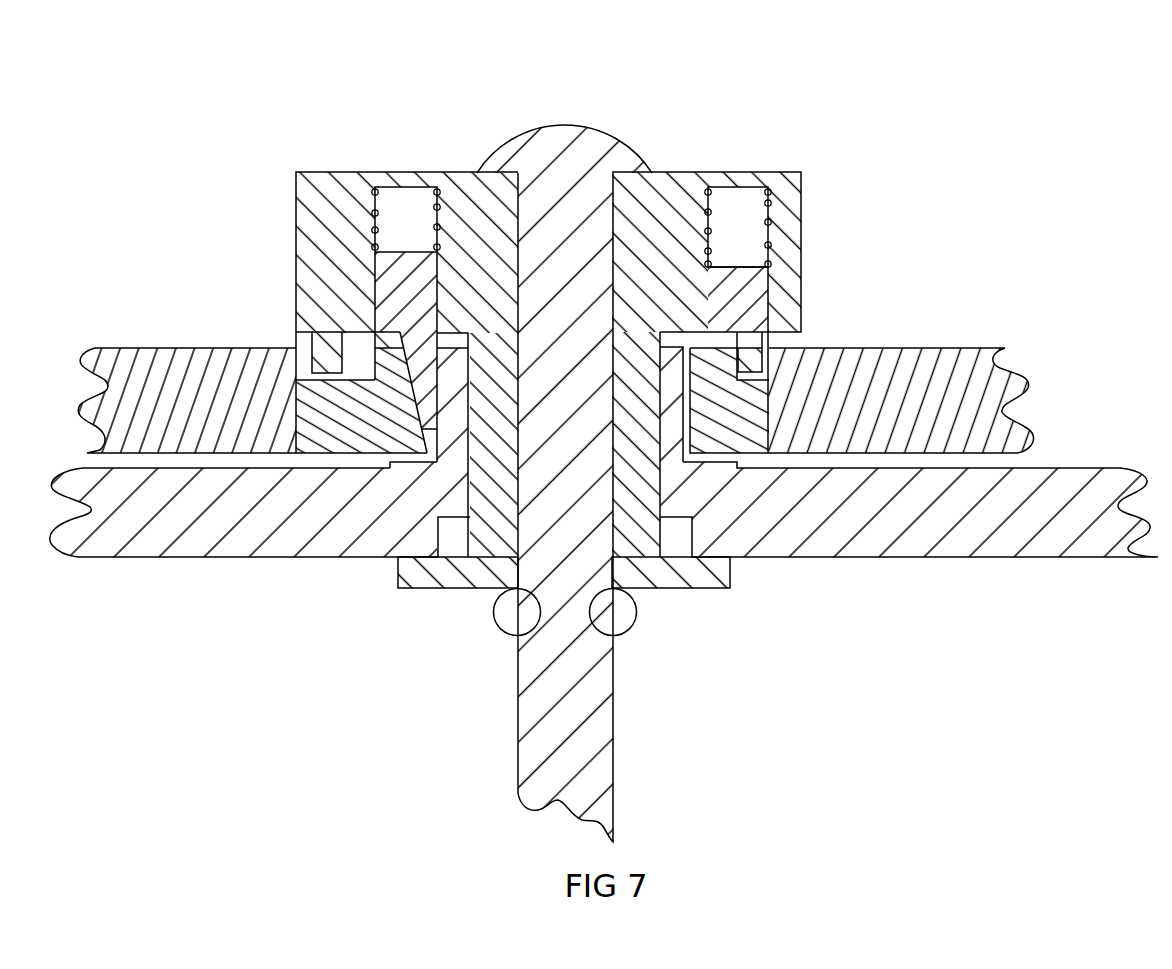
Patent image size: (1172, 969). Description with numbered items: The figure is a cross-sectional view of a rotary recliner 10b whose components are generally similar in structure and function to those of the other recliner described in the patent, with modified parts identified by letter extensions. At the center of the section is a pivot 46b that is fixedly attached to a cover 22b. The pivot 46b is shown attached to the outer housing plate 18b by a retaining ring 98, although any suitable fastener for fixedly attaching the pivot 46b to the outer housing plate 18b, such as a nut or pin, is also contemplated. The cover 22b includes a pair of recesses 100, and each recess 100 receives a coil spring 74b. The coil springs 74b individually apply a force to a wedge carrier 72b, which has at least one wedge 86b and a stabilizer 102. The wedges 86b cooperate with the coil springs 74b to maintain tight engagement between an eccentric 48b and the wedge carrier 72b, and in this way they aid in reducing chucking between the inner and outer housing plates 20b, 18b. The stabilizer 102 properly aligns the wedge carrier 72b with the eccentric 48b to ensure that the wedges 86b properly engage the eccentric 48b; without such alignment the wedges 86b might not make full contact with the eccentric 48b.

The rotary recliner 10b is at (604, 431).
The outer housing plate 18b is at (140, 572).
The inner housing plate 20b is at (162, 338).
The cover 22b is at (688, 158).
The pivot 46b is at (574, 116).
The eccentric 48b is at (410, 464).
The wedge carrier 72b is at (366, 290).
The coil spring 74b is at (374, 212).
The wedge 86b is at (422, 378).
The retaining ring 98 is at (622, 618).
The recess 100 is at (395, 203).
The stabilizer 102 is at (762, 354).